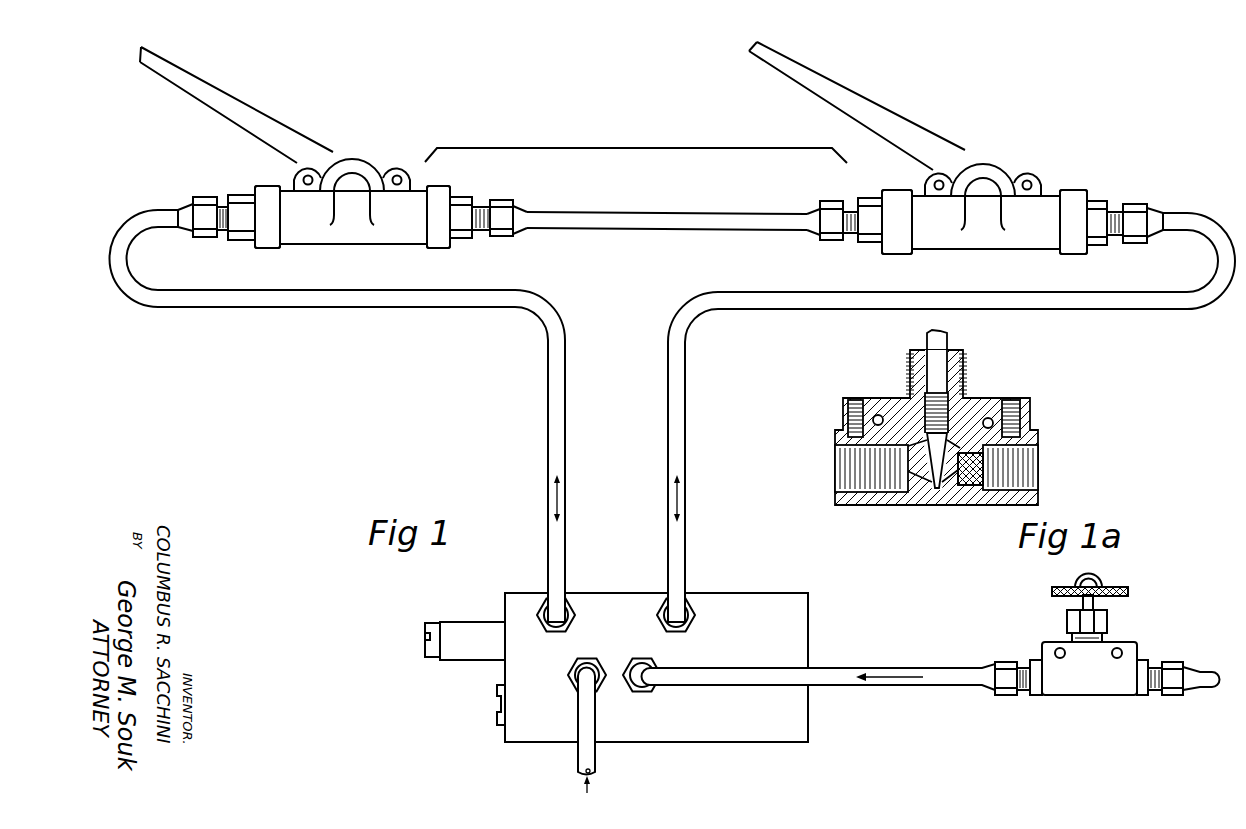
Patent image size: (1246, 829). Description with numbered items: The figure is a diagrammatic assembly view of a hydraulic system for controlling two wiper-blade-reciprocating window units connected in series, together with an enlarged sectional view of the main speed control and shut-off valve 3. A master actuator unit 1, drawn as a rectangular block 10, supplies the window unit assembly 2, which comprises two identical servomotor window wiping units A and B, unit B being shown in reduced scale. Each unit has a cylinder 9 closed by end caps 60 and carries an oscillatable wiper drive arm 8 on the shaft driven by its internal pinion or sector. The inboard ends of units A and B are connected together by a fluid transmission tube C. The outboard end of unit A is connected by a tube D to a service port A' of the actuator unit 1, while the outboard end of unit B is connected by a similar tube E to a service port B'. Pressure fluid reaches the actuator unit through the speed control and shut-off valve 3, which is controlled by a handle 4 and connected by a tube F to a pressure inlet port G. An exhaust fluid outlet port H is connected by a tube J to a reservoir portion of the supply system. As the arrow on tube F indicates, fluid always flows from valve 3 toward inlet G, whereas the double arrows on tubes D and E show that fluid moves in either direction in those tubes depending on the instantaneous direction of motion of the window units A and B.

In FIG. 1, the master actuator unit 1 is at (818, 624).
In FIG. 1, the window unit assembly 2 is at (600, 148).
In FIG. 1, the main speed control and shut-off valve 3 is at (1070, 688).
In FIG. 1A, the main speed control and shut-off valve 3 is at (928, 504).
In FIG. 1, the handle 4 is at (1128, 592).
In FIG. 1, the wiper drive arm 8 is at (267, 118).
In FIG. 1, the cylinder 9 is at (366, 240).
In FIG. 1, the valve block 10 is at (764, 653).
In FIG. 1, the cylinder end cap 60 is at (262, 250).
In FIG. 1, the window wiping unit A is at (352, 203).
In FIG. 1, the window wiping unit B is at (984, 209).
In FIG. 1, the tube C is at (632, 211).
In FIG. 1, the tube D is at (124, 217).
In FIG. 1, the tube E is at (1197, 218).
In FIG. 1, the tube F is at (893, 670).
In FIG. 1, the pressure inlet port G is at (645, 690).
In FIG. 1, the exhaust fluid outlet port H is at (582, 672).
In FIG. 1, the tube J is at (597, 761).
In FIG. 1, the service port A' is at (573, 615).
In FIG. 1, the service port B' is at (692, 615).